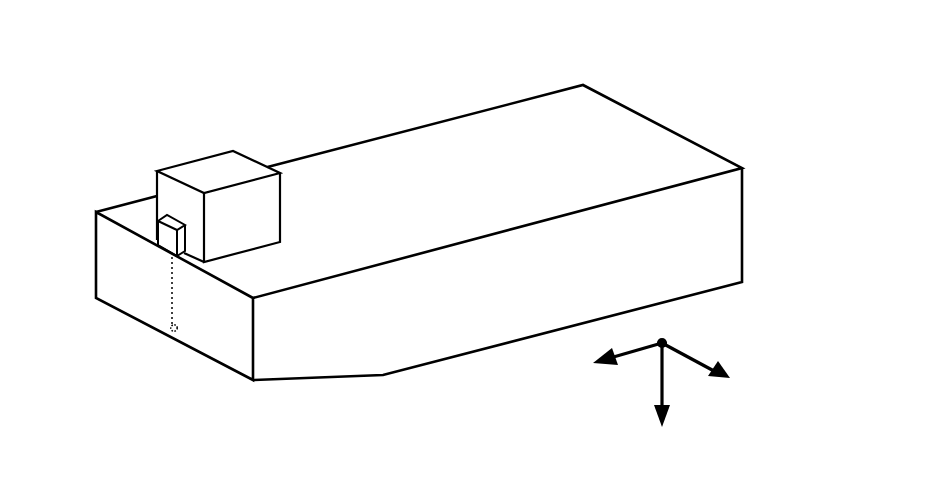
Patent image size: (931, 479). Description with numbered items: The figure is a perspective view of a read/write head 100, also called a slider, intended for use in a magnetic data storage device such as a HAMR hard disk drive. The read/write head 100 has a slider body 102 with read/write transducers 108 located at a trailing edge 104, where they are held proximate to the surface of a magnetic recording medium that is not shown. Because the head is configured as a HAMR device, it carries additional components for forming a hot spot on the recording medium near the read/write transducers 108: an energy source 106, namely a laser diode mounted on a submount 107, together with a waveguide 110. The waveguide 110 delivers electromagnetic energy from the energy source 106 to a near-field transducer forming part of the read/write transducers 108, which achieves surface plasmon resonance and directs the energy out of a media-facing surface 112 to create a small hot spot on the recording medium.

The read/write head 100 is at (306, 92).
The slider body 102 is at (370, 150).
The trailing edge 104 is at (98, 278).
The energy source 106 is at (157, 219).
The submount 107 is at (175, 168).
The read/write transducers 108 is at (164, 350).
The waveguide 110 is at (172, 290).
The media-facing surface 112 is at (240, 380).